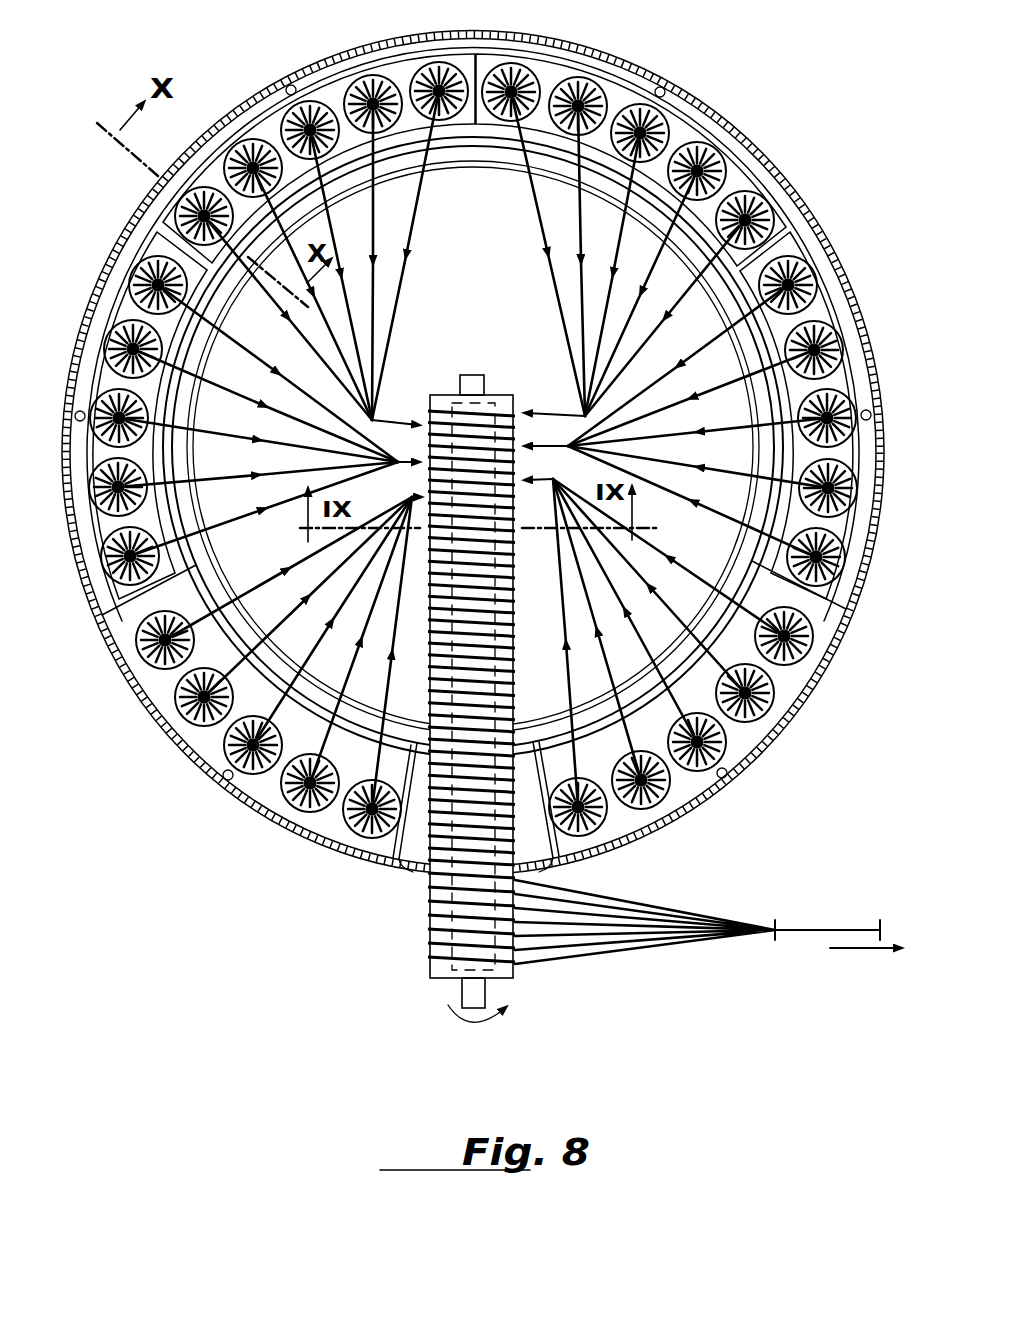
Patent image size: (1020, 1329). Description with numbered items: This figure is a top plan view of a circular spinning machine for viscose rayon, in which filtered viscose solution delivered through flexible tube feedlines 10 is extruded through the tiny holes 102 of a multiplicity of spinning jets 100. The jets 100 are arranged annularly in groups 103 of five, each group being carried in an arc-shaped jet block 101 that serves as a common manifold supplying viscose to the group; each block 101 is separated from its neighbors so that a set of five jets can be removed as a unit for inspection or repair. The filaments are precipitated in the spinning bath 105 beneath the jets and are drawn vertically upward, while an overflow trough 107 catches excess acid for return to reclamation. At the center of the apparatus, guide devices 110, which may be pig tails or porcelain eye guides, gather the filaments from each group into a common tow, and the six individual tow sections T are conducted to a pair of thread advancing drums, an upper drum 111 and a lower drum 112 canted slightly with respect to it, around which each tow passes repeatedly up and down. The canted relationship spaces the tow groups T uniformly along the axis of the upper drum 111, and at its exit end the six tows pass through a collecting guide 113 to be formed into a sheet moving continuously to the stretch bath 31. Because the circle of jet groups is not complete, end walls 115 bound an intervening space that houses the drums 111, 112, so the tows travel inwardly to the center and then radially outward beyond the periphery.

The flexible tube feedlines 10 is at (876, 398).
The spinning jets 100 is at (420, 74).
The arc-shaped jet blocks 101 is at (112, 305).
The tiny holes 102 is at (292, 792).
The groups of jets 103 is at (485, 14).
The spinning bath 105 is at (792, 722).
The overflow trough 107 is at (178, 592).
The guide devices 110 is at (378, 425).
The upper drum 111 is at (430, 964).
The lower canted drum 112 is at (520, 600).
The collecting guide 113 is at (766, 945).
The end walls 115 is at (412, 868).
The stretch bath 31 is at (860, 1002).
The tow sections T is at (398, 250).